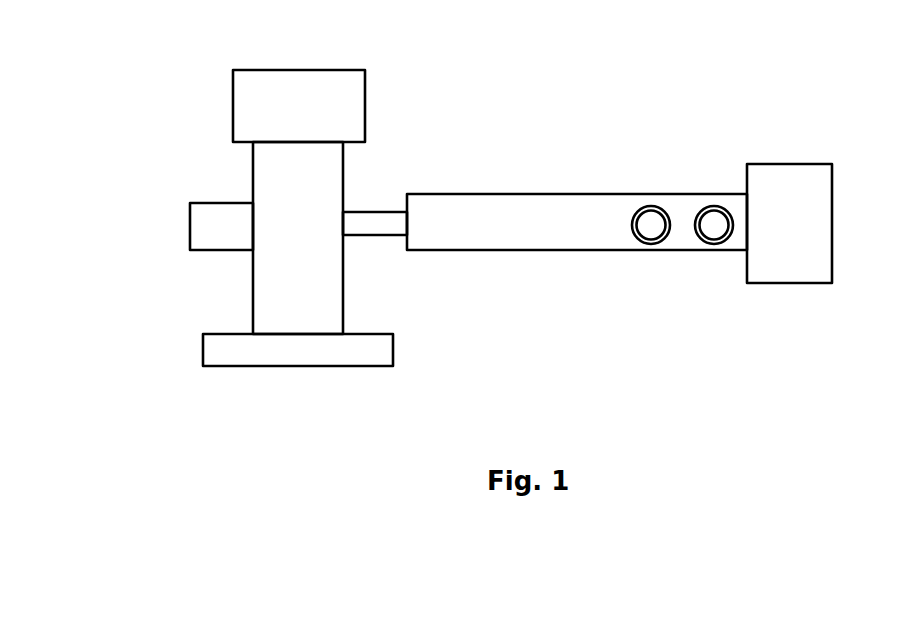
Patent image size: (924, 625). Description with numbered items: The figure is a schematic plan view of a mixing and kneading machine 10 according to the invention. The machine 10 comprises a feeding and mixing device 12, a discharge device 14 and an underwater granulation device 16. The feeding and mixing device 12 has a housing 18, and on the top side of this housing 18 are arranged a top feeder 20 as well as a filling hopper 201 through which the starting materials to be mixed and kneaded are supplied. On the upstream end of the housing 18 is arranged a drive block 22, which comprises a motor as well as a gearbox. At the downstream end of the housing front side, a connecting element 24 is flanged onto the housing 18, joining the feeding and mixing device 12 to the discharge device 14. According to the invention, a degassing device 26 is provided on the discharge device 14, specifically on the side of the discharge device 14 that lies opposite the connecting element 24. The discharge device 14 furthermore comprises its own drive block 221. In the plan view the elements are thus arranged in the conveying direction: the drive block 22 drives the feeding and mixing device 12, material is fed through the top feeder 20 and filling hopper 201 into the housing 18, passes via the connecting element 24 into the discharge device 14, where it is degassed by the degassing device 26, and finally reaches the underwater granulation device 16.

The mixing and kneading machine 10 is at (704, 100).
The feeding and mixing device 12 is at (860, 287).
The discharge device 14 is at (215, 53).
The underwater granulation device 16 is at (300, 366).
The housing 18 is at (468, 194).
The top feeder 20 is at (645, 205).
The filling hopper 201 is at (718, 205).
The drive block 22 is at (832, 197).
The drive block 221 is at (303, 70).
The connecting element 24 is at (368, 212).
The degassing device 26 is at (212, 250).